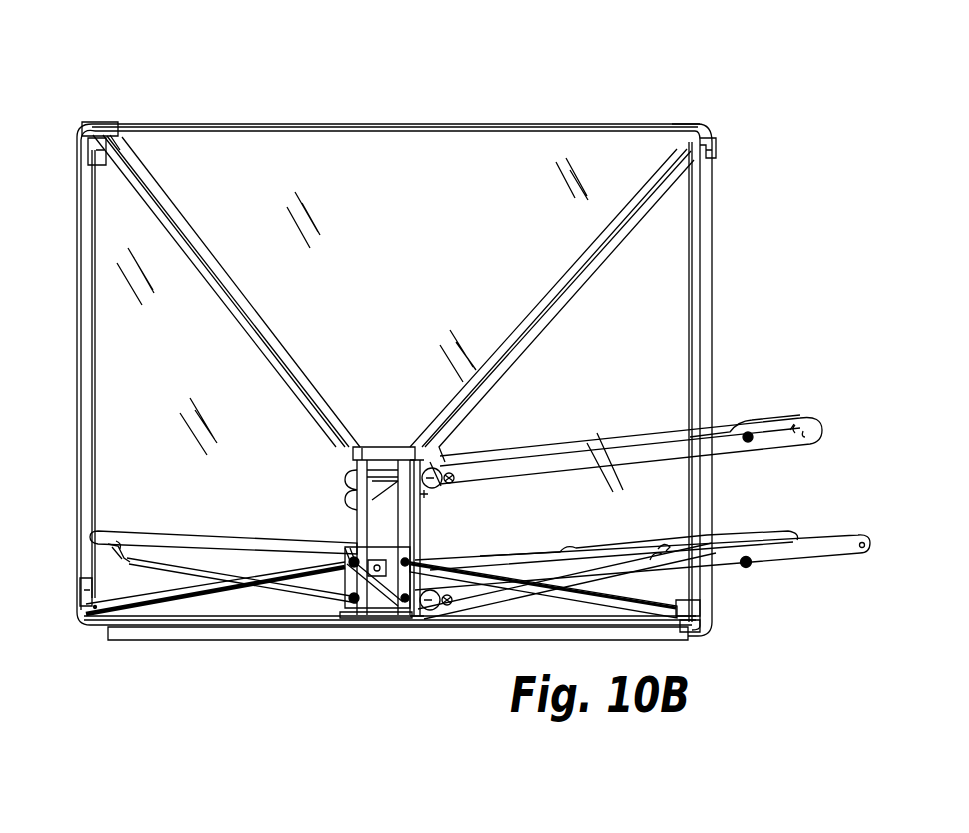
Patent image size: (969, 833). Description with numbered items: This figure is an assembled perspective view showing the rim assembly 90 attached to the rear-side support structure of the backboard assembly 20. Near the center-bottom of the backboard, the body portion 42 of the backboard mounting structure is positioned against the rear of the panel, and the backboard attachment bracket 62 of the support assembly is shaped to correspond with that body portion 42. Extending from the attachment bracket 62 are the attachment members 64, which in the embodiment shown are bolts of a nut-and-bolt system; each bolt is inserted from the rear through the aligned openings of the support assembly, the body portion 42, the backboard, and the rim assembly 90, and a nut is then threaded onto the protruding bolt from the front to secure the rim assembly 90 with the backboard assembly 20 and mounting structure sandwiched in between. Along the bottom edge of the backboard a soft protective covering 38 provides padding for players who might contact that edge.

The backboard assembly 20 is at (396, 379).
The protective covering 38 is at (213, 633).
The body portion 42 is at (376, 450).
The backboard attachment bracket 62 is at (426, 506).
The attachment members 64 is at (338, 583).
The rim assembly 90 is at (166, 496).